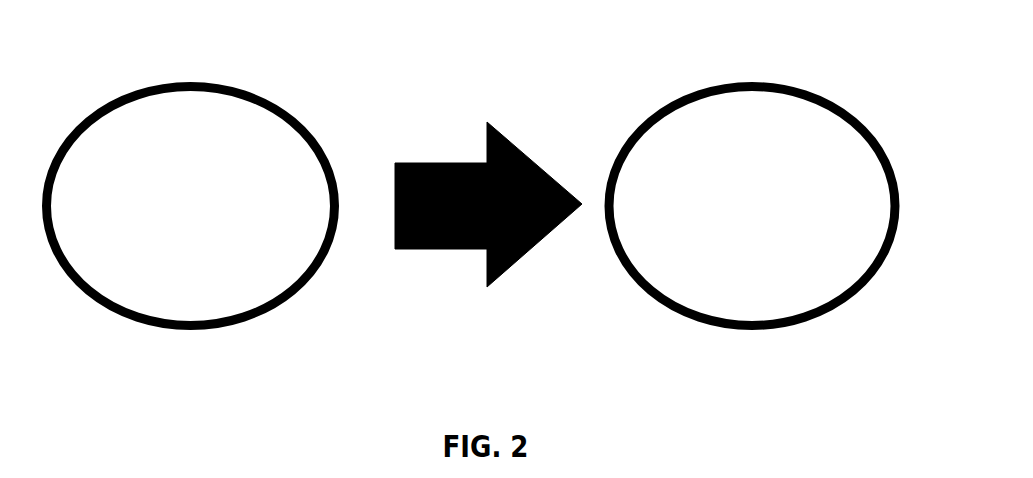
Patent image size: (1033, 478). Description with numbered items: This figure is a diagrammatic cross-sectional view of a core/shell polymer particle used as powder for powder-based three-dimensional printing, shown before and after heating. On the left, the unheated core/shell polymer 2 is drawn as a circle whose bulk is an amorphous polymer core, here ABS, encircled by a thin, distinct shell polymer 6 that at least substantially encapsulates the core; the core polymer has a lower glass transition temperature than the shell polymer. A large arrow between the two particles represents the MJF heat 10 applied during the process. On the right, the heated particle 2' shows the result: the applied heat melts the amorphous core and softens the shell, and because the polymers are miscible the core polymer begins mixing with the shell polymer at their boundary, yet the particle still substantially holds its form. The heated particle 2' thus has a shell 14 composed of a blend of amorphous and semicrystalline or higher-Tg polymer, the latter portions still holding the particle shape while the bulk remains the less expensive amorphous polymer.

The core/shell polymer particle (unheated) 2 is at (182, 164).
The core/shell polymer particle (heated) 2' is at (780, 163).
The shell polymer 6 is at (305, 128).
The MJF heat 10 is at (463, 133).
The shell (blended) 14 is at (897, 173).